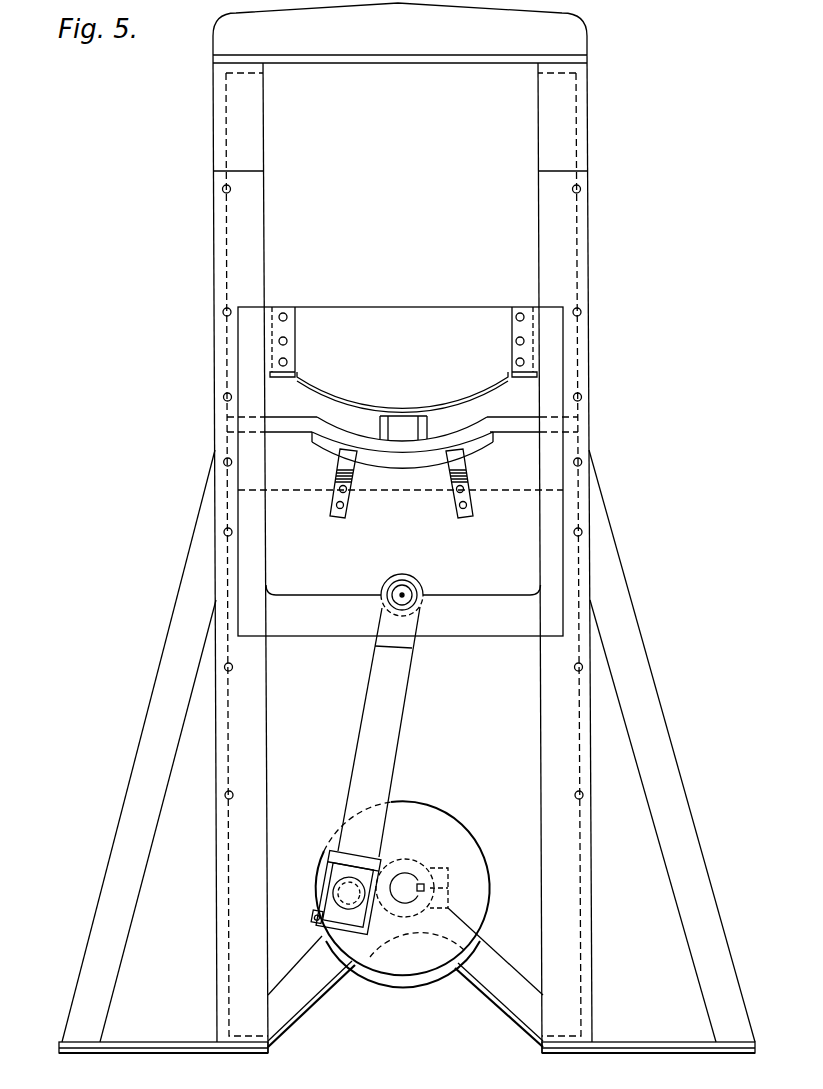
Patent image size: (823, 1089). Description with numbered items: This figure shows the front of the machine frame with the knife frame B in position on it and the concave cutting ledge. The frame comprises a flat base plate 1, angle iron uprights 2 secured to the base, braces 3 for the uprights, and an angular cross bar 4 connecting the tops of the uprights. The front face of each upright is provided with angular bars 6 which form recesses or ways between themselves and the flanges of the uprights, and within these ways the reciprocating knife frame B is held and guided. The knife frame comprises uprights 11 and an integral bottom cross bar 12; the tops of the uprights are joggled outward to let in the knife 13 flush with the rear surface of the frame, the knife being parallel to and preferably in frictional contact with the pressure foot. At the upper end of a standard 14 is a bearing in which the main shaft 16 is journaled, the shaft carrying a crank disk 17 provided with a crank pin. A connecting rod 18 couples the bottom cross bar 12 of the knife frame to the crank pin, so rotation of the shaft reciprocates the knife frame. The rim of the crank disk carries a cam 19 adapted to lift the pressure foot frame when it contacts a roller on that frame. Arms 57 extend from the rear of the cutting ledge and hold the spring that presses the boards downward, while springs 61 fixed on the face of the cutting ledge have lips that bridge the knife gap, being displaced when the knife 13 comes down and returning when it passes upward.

The flat base plate 1 is at (212, 1055).
The angle iron uprights 2 is at (211, 94).
The braces 3 is at (128, 820).
The angular cross bar 4 is at (400, 33).
The angular bars 6 is at (578, 277).
The uprights of the knife frame 11 is at (250, 377).
The bottom cross bar 12 is at (480, 628).
The knife 13 is at (400, 471).
The standard 14 is at (312, 982).
The main shaft 16 is at (404, 877).
The crank disk 17 is at (474, 836).
The connecting rod 18 is at (387, 727).
The cam 19 is at (397, 986).
The arms 57 is at (428, 428).
The springs 61 is at (472, 470).
The knife frame B is at (330, 653).